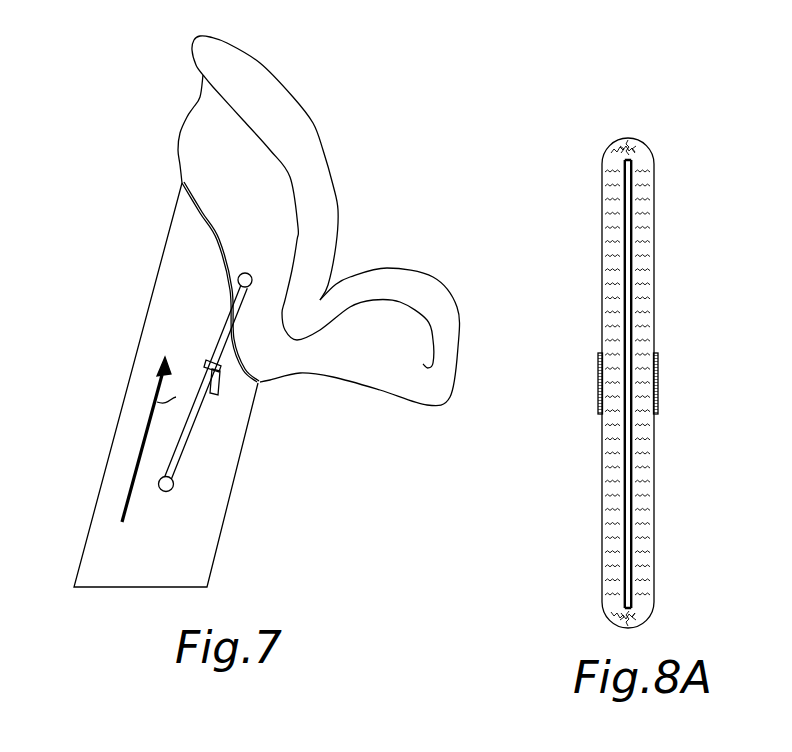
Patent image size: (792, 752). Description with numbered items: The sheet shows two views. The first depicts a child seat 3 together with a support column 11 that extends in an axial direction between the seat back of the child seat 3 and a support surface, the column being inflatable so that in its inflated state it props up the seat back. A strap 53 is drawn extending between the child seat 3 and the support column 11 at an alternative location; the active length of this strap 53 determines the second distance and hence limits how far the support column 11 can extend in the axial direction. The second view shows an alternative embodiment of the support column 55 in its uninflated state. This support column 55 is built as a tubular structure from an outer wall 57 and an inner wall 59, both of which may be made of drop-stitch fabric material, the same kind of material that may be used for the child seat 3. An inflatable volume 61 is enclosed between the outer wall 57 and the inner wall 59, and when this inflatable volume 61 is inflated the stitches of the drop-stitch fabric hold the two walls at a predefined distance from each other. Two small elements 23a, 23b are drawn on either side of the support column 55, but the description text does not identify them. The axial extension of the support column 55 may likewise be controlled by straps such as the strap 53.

In FIG. 7, the child seat 3 is at (360, 174).
In FIG. 7, the support column 11 is at (136, 317).
In FIG. 7, the strap 53 is at (187, 433).
In FIG. 8A, the support column 55 is at (661, 373).
In FIG. 8A, the outer wall 57 is at (655, 515).
In FIG. 8A, the inner wall 59 is at (627, 306).
In FIG. 8A, the inflatable volume 61 is at (608, 253).
In FIG. 8A, the left contact pad 23a is at (598, 397).
In FIG. 8A, the right contact pad 23b is at (658, 370).